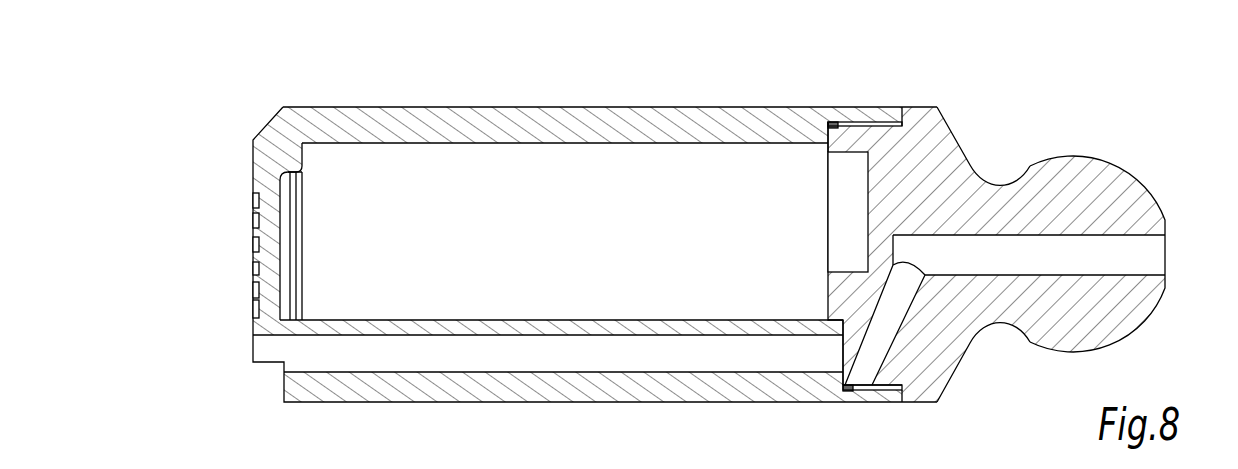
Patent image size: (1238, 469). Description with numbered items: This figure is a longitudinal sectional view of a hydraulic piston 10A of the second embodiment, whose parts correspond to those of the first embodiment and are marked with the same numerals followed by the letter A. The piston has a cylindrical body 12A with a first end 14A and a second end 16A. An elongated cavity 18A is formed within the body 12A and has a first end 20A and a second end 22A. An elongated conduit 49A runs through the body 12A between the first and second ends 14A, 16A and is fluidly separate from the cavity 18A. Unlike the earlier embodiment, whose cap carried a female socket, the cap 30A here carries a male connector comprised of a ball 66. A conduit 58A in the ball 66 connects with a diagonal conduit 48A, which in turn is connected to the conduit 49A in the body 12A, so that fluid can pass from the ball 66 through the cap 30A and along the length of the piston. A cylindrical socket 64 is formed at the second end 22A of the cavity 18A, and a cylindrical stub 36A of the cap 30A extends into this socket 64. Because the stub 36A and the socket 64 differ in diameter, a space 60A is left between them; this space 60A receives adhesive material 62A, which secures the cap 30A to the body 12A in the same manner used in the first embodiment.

The hydraulic piston 10A is at (212, 74).
The cylindrical body 12A is at (555, 244).
The first end 14A is at (257, 185).
The second end 16A is at (991, 255).
The elongated cavity 18A is at (517, 230).
The first end of cavity 20A is at (299, 207).
The second end of cavity 22A is at (828, 168).
The cap 30A is at (1132, 245).
The cylindrical stub 36A is at (828, 283).
The diagonal conduit 48A is at (883, 303).
The elongated conduit 49A is at (592, 357).
The conduit 58A is at (1108, 262).
The space 60A is at (860, 100).
The adhesive material 62A is at (850, 123).
The cylindrical socket 64 is at (828, 122).
The ball 66 is at (1132, 176).